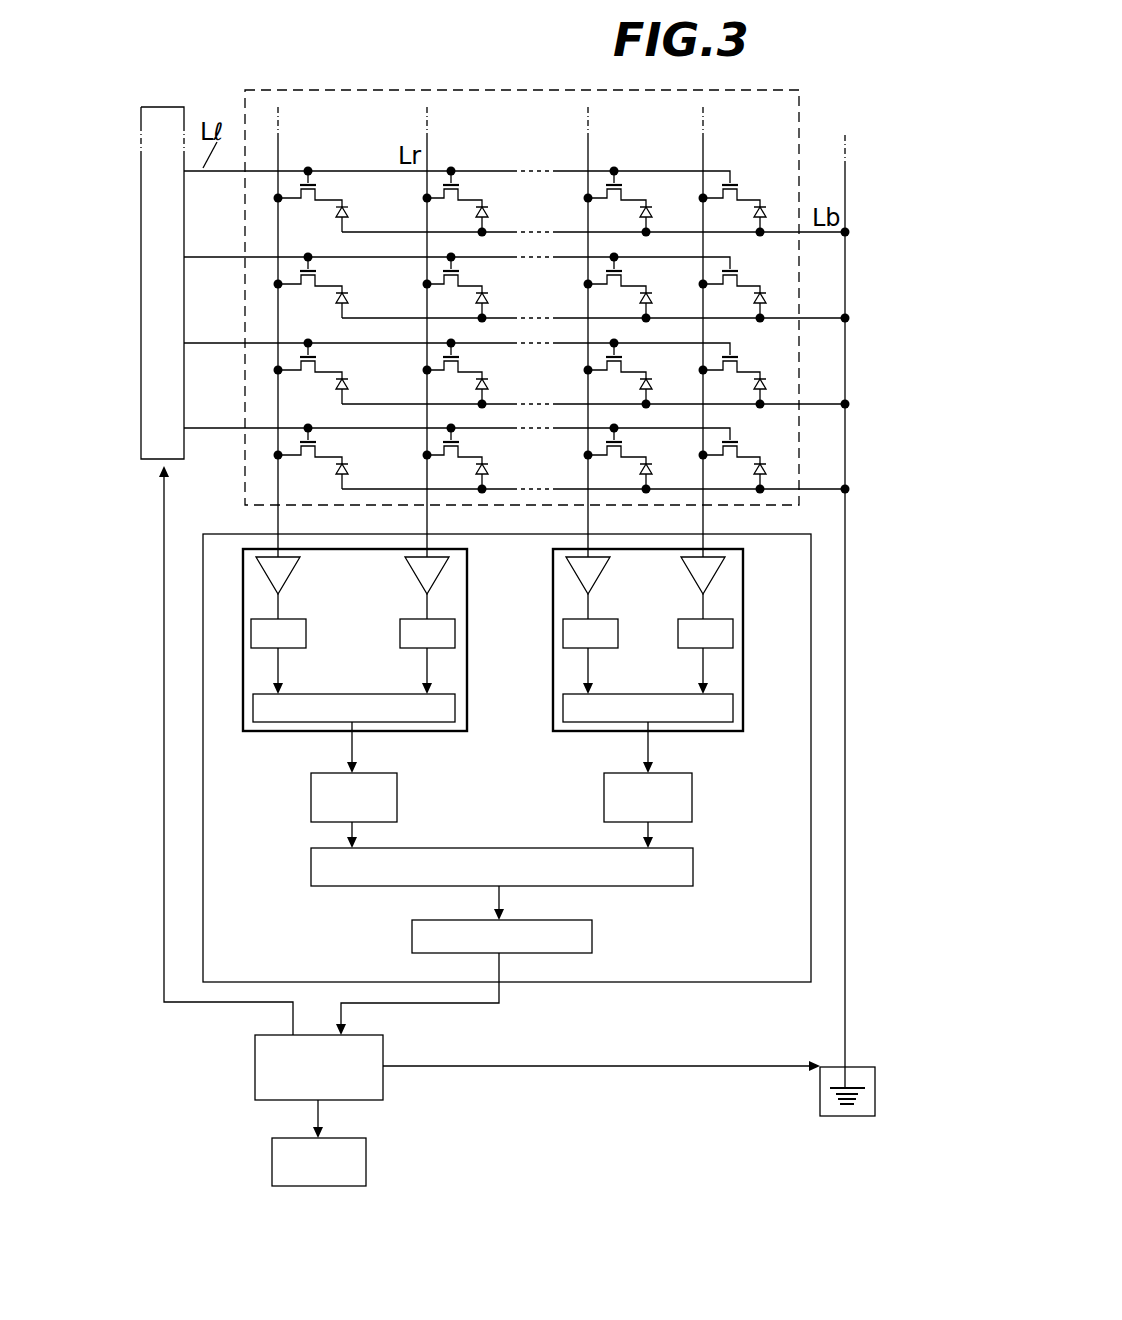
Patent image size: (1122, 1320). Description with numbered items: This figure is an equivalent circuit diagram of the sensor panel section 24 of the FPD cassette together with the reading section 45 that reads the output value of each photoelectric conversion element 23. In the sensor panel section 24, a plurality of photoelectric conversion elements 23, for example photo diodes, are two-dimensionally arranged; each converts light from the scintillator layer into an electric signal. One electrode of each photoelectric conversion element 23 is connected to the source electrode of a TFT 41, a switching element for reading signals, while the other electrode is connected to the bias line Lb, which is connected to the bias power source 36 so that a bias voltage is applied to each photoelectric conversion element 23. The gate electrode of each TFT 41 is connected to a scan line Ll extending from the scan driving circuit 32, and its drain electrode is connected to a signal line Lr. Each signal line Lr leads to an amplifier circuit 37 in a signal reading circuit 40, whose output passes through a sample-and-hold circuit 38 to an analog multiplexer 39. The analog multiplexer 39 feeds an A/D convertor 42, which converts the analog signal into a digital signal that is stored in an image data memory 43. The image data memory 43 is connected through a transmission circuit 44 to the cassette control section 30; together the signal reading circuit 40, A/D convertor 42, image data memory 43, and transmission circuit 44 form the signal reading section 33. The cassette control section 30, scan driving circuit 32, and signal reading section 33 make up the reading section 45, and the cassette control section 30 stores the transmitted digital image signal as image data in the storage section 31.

The photoelectric conversion element 23 is at (352, 206).
The sensor panel section 24 is at (517, 553).
The cassette control section 30 is at (383, 1082).
The storage section 31 is at (366, 1160).
The scan driving circuit 32 is at (141, 183).
The signal reading section 33 is at (573, 982).
The bias power source 36 is at (843, 1118).
The amplifier circuit 37 is at (445, 570).
The sample-and-hold circuit 38 is at (457, 636).
The analog multiplexer 39 is at (425, 722).
The signal reading circuit 40 is at (270, 733).
The TFT 41 is at (324, 182).
The A/D convertor 42 is at (397, 800).
The image data memory 43 is at (693, 870).
The transmission circuit 44 is at (592, 940).
The reading section 45 is at (135, 660).